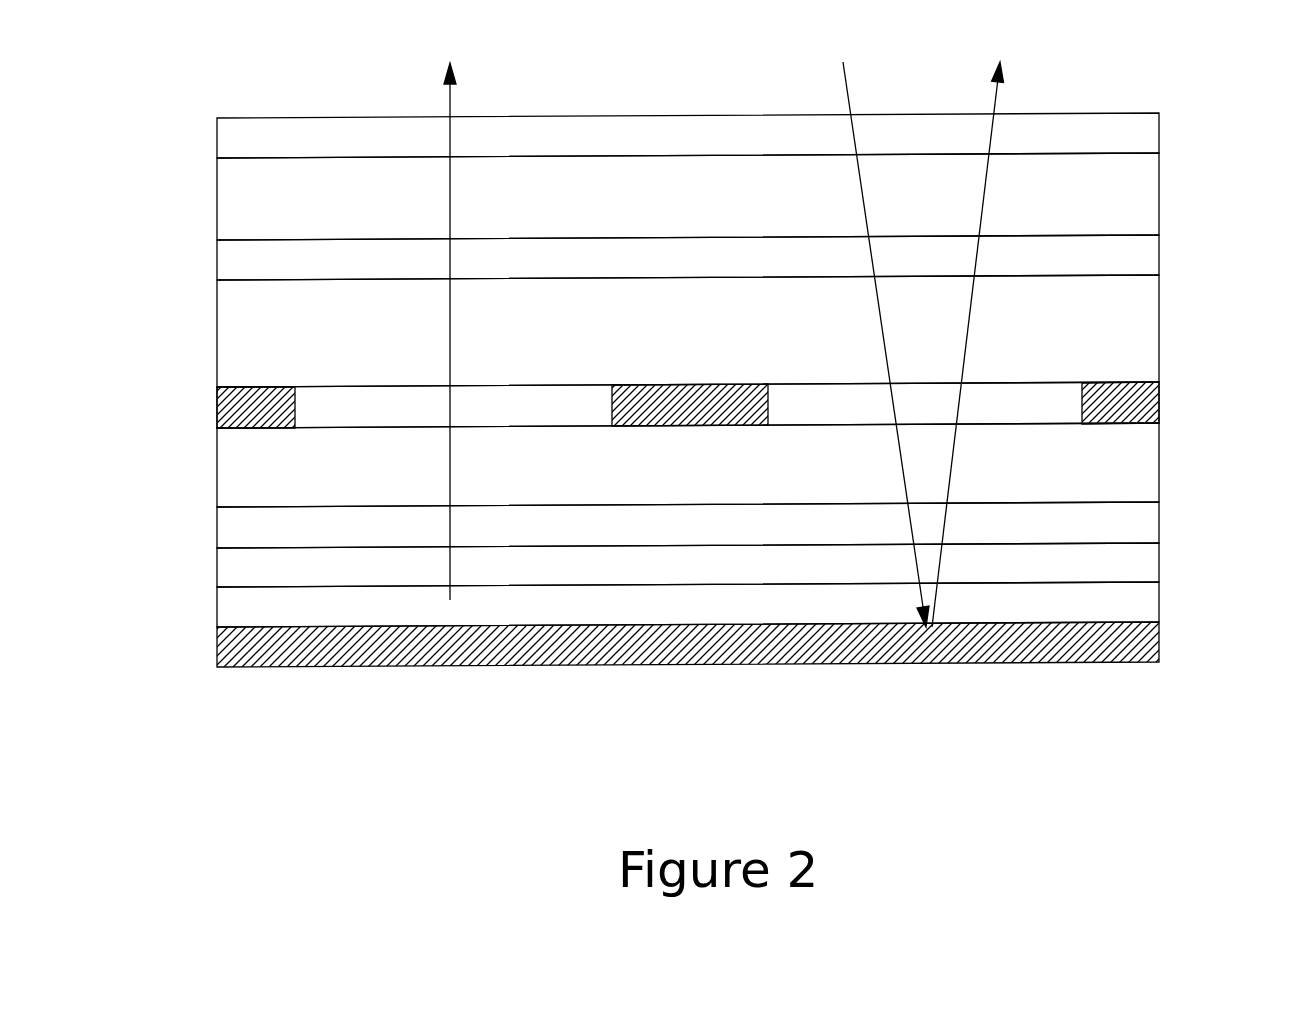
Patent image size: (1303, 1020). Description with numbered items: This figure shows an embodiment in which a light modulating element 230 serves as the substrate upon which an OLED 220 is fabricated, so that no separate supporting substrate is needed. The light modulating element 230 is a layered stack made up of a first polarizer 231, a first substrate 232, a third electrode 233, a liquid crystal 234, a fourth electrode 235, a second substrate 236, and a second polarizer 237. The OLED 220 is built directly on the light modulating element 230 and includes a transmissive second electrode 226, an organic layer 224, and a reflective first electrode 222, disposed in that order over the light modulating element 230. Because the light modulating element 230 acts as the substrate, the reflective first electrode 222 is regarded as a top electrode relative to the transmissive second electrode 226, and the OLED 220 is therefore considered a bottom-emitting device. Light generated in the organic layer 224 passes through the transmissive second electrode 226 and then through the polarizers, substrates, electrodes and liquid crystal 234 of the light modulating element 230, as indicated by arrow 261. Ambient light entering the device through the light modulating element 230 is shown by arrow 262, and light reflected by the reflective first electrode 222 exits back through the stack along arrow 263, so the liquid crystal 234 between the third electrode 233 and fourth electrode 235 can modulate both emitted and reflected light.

The OLED 220 is at (217, 565).
The reflective first electrode 222 is at (1163, 642).
The organic layer 224 is at (1163, 600).
The transmissive second electrode 226 is at (1162, 562).
The light modulating element 230 is at (217, 133).
The first polarizer 231 is at (1162, 521).
The first substrate 232 is at (1162, 460).
The third electrode 233 is at (1005, 423).
The liquid crystal 234 is at (1159, 326).
The fourth electrode 235 is at (1027, 234).
The second substrate 236 is at (1159, 192).
The second polarizer 237 is at (1159, 132).
The arrow 261 is at (450, 104).
The arrow 262 is at (840, 90).
The arrow 263 is at (1000, 100).